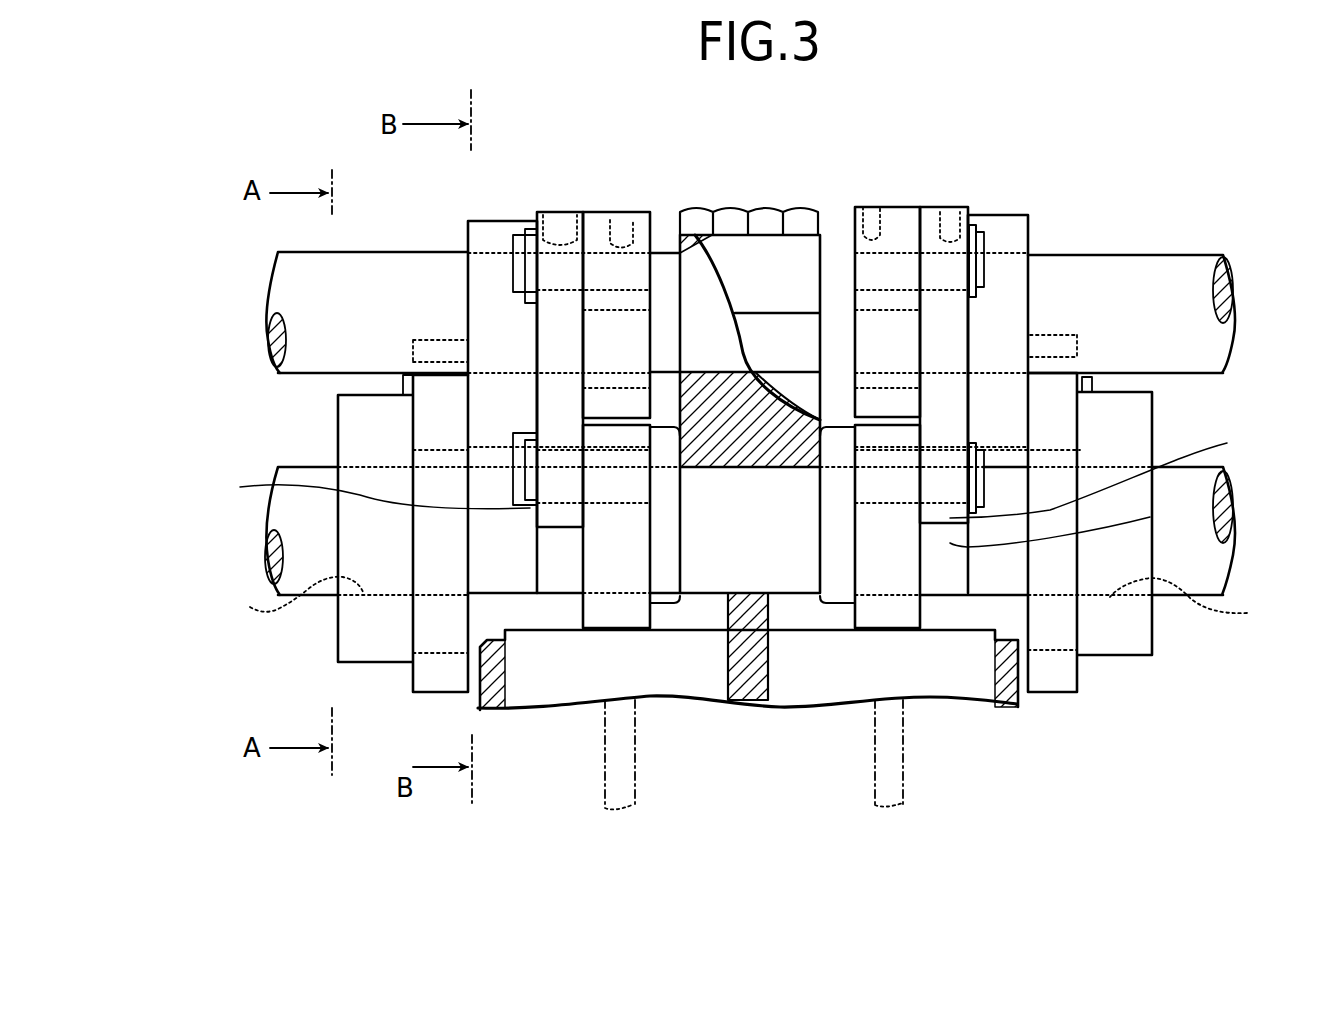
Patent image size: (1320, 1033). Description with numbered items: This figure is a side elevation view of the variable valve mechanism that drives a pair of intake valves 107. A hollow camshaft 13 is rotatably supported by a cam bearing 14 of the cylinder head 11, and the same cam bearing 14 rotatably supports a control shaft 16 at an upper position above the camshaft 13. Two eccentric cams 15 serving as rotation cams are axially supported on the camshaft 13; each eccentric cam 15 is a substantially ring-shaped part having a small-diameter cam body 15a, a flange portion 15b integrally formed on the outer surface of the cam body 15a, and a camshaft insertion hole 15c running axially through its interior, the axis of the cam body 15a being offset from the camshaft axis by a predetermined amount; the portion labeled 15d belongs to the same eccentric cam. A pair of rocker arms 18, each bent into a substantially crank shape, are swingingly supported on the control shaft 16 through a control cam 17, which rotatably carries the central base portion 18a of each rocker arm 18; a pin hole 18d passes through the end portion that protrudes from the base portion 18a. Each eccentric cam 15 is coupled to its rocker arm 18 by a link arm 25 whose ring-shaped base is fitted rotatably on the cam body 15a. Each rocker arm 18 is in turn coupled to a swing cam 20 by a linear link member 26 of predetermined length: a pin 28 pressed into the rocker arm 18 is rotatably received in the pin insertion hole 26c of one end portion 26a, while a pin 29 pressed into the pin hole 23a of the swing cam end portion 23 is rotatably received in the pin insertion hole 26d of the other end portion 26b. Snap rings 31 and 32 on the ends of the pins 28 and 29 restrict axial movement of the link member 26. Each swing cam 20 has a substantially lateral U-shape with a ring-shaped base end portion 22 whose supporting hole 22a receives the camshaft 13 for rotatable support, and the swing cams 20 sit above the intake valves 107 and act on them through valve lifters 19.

The cylinder head 11 is at (1000, 705).
The camshaft 13 is at (1200, 552).
The cam bearing 14 is at (817, 204).
The eccentric cam 15 is at (378, 663).
The cam body 15a is at (350, 642).
The flange portion 15b is at (440, 640).
The camshaft insertion hole 15c is at (746, 600).
The housing lower portion 15d is at (452, 657).
The control shaft 16 is at (373, 277).
The control cam 17 is at (648, 250).
The rocker arm 18 is at (613, 208).
The base portion 18a is at (867, 353).
The pin hole 18d is at (632, 307).
The valve lifter 19 is at (640, 690).
The swing cam 20 is at (658, 574).
The base end portion 22 is at (672, 488).
The supporting hole 22a is at (615, 560).
The end portion 23 is at (623, 587).
The pin hole 23a is at (610, 493).
The link arm 25 is at (410, 693).
The link member 26 is at (535, 325).
The one end portion 26a is at (562, 212).
The other end portion 26b is at (557, 527).
The pin insertion hole 26c is at (547, 215).
The pin insertion hole 26d is at (540, 497).
The pin 28 is at (512, 250).
The pin 29 is at (513, 457).
The snap ring 31 is at (527, 235).
The snap ring 32 is at (736, 485).
The intake valve 107 is at (635, 785).